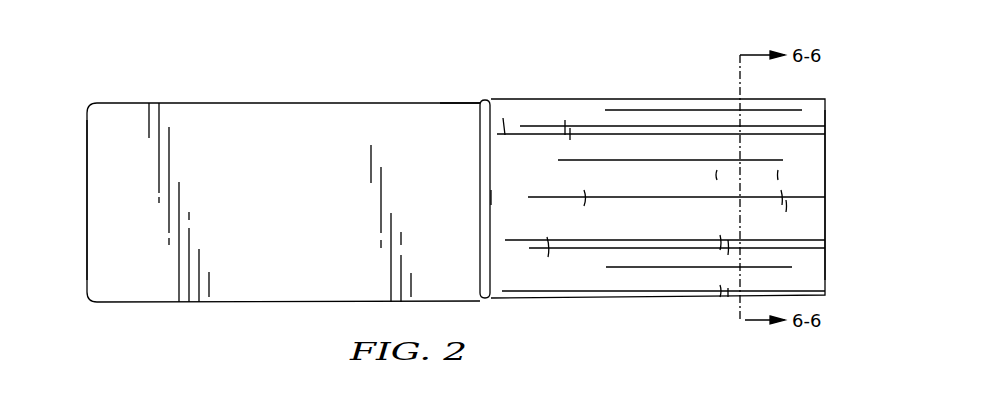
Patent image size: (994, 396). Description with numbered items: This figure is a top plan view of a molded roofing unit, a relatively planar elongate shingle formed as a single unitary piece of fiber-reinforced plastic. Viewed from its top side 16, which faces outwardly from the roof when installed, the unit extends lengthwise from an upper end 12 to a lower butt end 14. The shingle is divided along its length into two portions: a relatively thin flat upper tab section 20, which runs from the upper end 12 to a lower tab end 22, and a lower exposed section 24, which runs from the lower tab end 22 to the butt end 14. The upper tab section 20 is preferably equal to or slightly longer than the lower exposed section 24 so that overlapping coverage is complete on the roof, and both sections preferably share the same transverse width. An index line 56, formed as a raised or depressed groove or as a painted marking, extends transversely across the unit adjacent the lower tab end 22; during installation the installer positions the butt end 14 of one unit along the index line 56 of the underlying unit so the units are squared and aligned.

The upper end 12 is at (86, 287).
The lower butt end 14 is at (826, 283).
The top side 16 is at (447, 108).
The upper tab section 20 is at (477, 93).
The lower tab end 22 is at (487, 300).
The lower exposed section 24 is at (825, 91).
The index line 56 is at (488, 198).